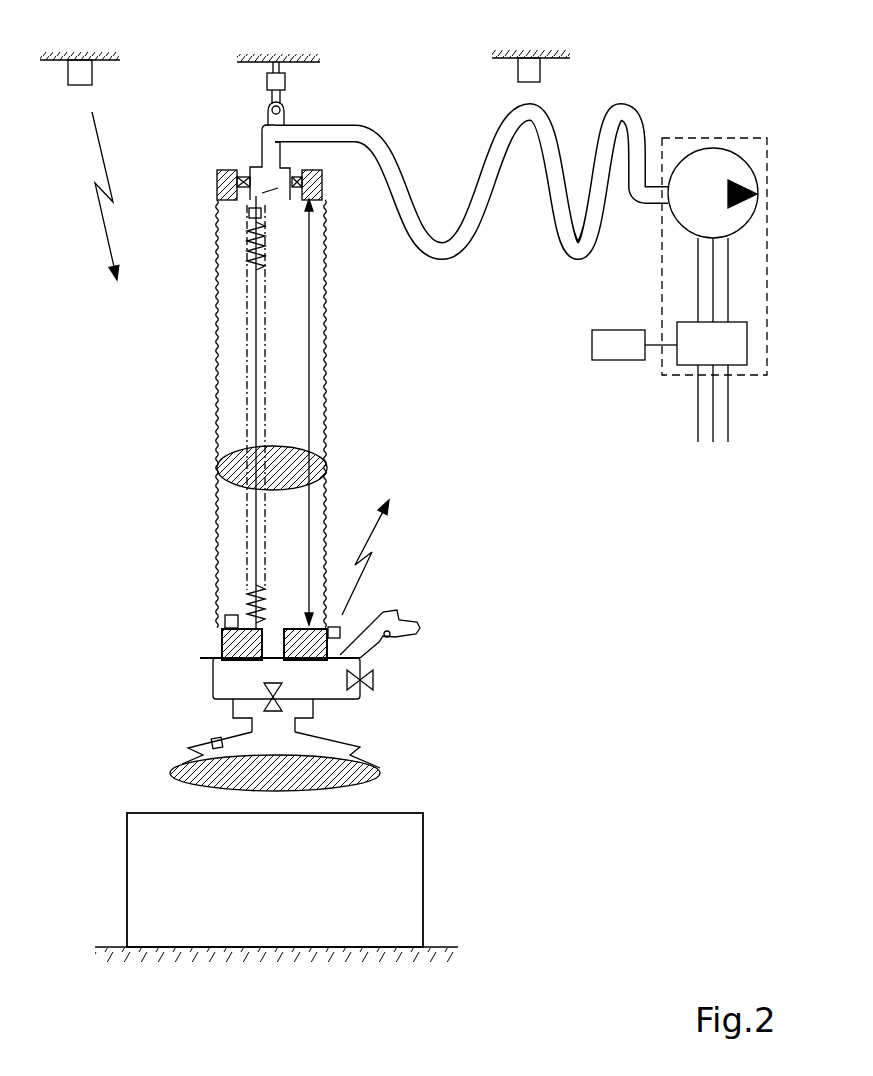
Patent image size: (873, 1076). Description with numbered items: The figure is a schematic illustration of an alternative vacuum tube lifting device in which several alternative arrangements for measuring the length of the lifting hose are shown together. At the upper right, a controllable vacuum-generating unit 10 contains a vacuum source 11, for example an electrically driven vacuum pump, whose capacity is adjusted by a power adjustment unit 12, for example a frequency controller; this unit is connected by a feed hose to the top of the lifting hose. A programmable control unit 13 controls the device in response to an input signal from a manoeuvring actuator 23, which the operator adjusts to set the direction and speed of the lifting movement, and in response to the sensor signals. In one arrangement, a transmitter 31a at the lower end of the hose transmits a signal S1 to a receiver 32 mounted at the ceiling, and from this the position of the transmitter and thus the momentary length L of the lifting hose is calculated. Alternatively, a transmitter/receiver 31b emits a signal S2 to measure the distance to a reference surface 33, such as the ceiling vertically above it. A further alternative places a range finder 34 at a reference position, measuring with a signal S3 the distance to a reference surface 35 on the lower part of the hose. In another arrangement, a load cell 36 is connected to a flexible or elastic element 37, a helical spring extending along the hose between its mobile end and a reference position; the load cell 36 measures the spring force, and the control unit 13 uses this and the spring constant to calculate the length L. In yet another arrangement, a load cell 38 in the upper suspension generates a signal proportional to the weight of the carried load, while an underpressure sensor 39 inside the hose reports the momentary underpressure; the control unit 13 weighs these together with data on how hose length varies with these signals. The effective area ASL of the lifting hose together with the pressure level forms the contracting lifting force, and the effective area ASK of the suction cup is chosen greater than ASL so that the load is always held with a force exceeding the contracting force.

The controllable vacuum-generating unit 10 is at (705, 267).
The vacuum source 11 is at (713, 148).
The power adjustment unit 12 is at (737, 375).
The programmable control unit 13 is at (600, 361).
The manoeuvring actuator 23 is at (418, 624).
The transmitter 31a is at (417, 589).
The transmitter/receiver 31b is at (342, 627).
The receiver 32 is at (530, 58).
The reference surface 33 is at (499, 71).
The range finder 34 is at (73, 85).
The reference surface 35 is at (201, 642).
The load cell 36 is at (250, 222).
The flexible or elastic element 37 is at (245, 345).
The load cell 38 is at (267, 80).
The underpressure sensor 39 is at (223, 622).
The momentary length of the lifting hose L is at (312, 368).
The effective area of the lifting hose ASL is at (320, 458).
The effective area of the suction cup ASK is at (357, 777).
The signal S1 is at (411, 547).
The signal S2 is at (373, 538).
The signal S3 is at (108, 247).